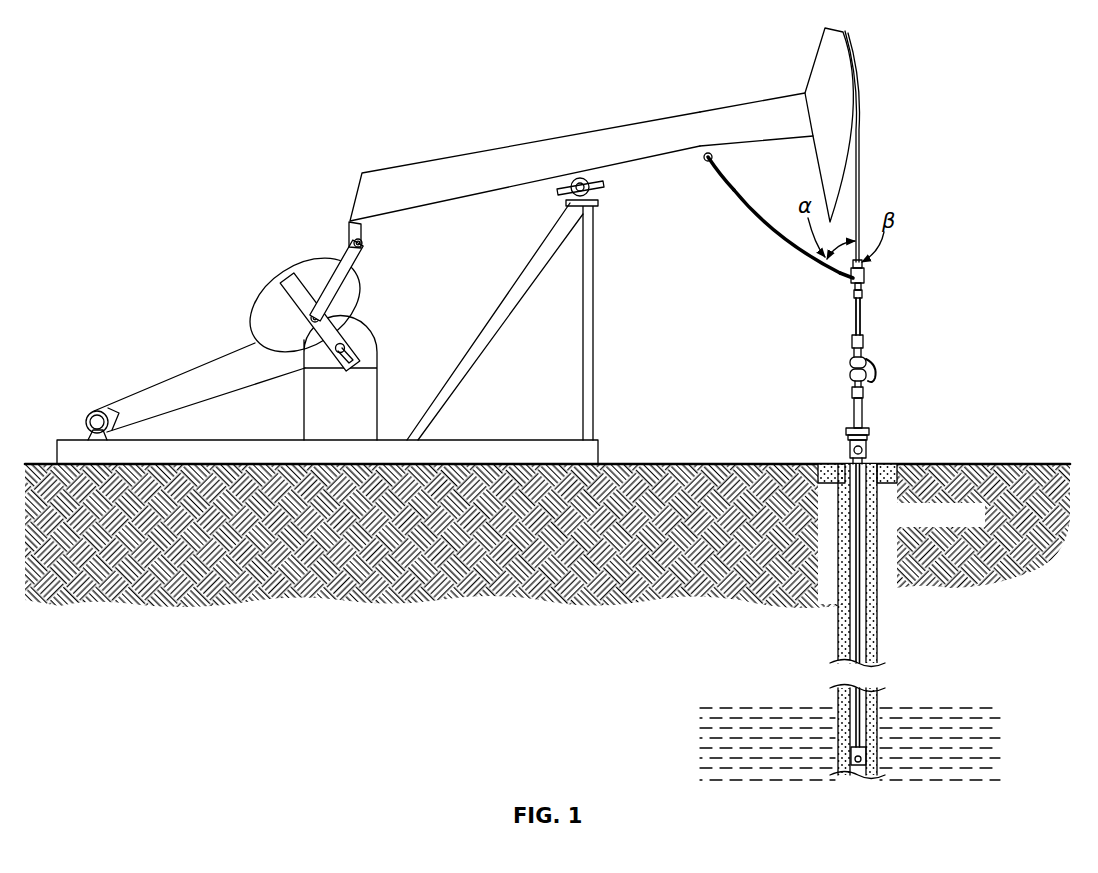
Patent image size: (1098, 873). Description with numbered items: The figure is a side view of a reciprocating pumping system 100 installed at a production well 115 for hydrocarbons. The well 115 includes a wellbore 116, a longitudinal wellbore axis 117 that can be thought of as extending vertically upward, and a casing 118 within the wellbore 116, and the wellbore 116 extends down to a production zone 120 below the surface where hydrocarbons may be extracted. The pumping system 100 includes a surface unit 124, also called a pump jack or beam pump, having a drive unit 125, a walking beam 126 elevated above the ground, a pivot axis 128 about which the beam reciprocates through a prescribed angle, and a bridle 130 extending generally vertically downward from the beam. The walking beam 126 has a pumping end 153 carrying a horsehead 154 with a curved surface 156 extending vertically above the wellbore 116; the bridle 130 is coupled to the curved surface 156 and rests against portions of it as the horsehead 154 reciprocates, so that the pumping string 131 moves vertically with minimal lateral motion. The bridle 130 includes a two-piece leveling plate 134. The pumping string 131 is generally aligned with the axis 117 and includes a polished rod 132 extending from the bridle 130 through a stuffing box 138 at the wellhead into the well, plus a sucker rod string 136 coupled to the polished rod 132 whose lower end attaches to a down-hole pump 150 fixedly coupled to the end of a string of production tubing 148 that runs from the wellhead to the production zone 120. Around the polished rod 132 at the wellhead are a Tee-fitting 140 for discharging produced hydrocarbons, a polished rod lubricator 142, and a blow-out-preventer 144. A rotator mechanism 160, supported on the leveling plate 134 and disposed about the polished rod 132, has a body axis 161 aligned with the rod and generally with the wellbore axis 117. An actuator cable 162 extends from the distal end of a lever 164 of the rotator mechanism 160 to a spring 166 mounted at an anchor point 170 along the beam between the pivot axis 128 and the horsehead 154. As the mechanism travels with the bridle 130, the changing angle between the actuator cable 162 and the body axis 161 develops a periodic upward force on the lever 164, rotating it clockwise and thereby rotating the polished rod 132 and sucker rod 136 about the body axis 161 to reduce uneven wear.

The reciprocating pumping system 100 is at (283, 97).
The production well 115 is at (215, 198).
The surface unit 124 is at (165, 292).
The drive unit 125 is at (172, 380).
The walking beam 126 is at (415, 170).
The pivot axis 128 is at (575, 185).
The pumping end 153 is at (775, 105).
The horsehead 154 is at (820, 65).
The curved surface 156 is at (864, 115).
The anchor point 170 is at (704, 155).
The spring 166 is at (710, 170).
The actuator cable 162 is at (775, 227).
The lever 164 is at (843, 274).
The rotator mechanism 160 is at (866, 272).
The leveling plate 134 is at (863, 292).
The bridle 130 is at (861, 198).
The pumping string 131 is at (855, 312).
The polished rod 132 is at (864, 341).
The polished rod lubricator 142 is at (850, 358).
The blow-out-preventer 144 is at (873, 378).
The stuffing box 138 is at (852, 389).
The Tee-fitting 140 is at (862, 408).
The longitudinal wellbore axis 117 is at (862, 530).
The body axis 161 is at (923, 605).
The sucker rod string 136 is at (861, 598).
The production tubing 148 is at (869, 632).
The casing 118 is at (839, 613).
The wellbore 116 is at (839, 645).
The production zone 120 is at (745, 715).
The down-hole pump 150 is at (867, 760).